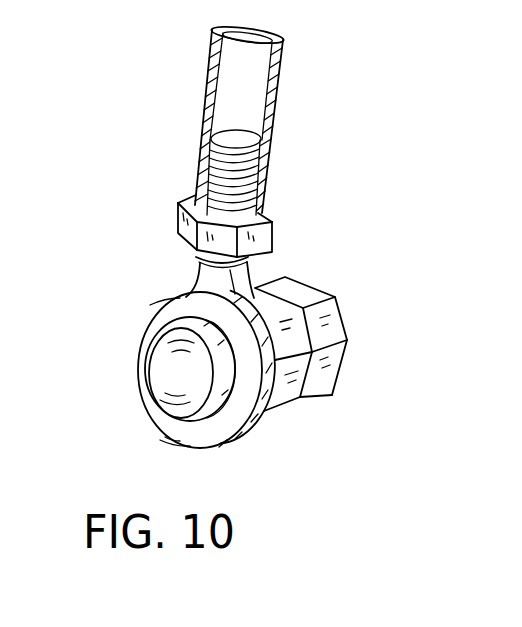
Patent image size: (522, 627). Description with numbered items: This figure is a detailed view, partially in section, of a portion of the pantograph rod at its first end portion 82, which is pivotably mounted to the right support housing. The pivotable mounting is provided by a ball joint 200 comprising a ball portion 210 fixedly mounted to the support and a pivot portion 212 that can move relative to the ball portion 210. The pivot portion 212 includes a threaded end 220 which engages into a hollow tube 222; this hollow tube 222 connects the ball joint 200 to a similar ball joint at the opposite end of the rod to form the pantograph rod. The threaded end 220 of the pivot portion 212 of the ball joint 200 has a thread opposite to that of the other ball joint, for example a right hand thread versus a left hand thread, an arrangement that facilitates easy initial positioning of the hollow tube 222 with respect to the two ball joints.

The first end portion 82 is at (130, 312).
The ball joint 200 is at (181, 377).
The ball portion 210 is at (330, 326).
The pivot portion 212 is at (220, 402).
The threaded end 220 is at (248, 192).
The hollow tube 222 is at (276, 100).